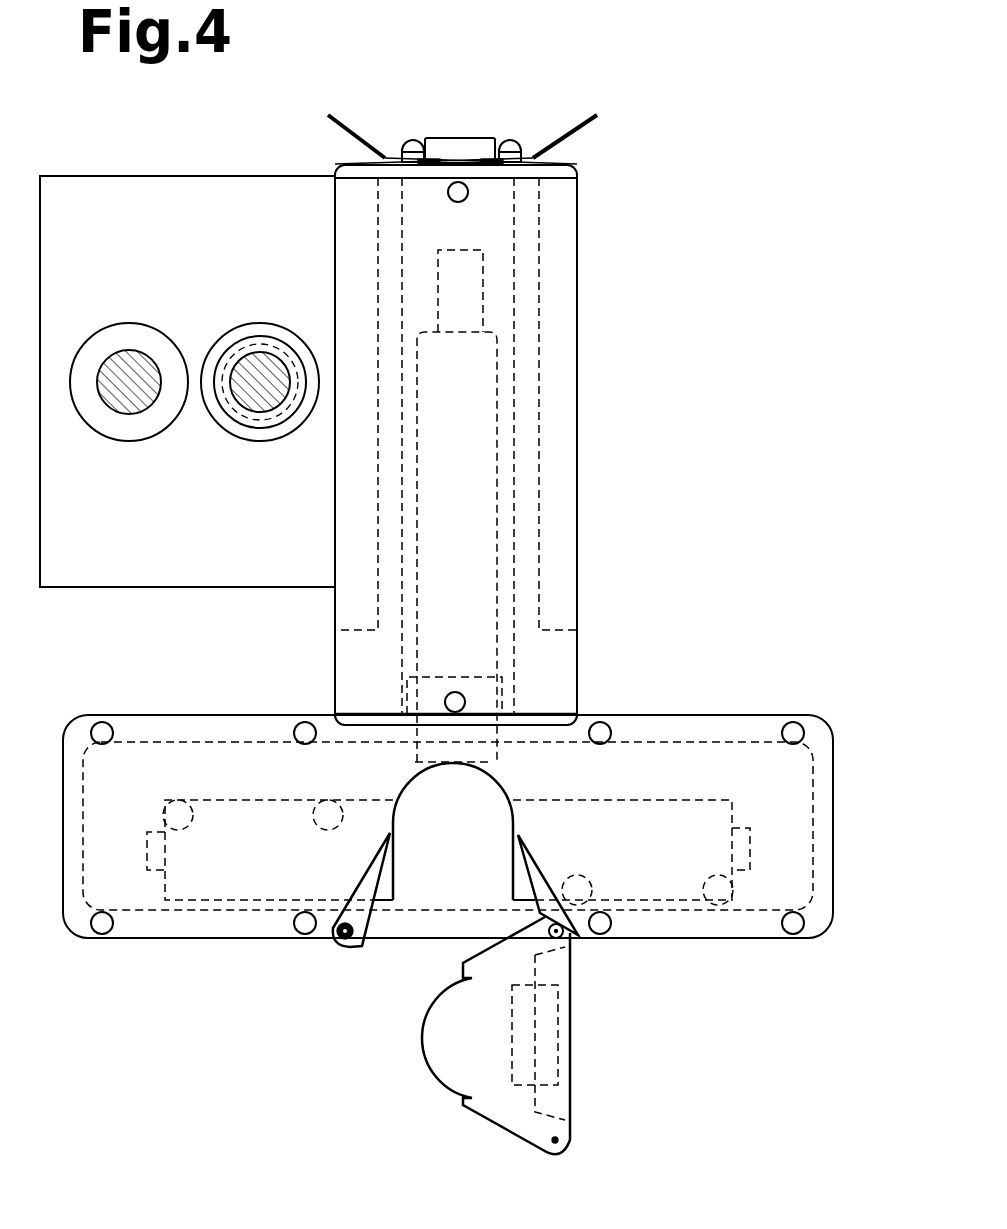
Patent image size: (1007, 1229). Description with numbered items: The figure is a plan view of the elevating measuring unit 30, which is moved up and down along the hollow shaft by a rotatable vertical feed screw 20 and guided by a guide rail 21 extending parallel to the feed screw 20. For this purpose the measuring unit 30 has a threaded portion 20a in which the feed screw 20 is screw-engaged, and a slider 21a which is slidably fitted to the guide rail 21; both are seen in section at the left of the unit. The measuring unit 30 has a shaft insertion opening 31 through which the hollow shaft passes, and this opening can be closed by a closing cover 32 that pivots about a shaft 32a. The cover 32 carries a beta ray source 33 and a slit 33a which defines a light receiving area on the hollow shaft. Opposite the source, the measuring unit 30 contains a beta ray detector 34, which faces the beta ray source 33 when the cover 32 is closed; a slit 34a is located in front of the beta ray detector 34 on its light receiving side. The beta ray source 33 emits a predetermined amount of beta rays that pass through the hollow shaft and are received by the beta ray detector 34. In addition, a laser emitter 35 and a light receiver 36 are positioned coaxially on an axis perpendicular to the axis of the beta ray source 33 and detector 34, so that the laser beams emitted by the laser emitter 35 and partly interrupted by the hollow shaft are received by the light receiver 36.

The feed screw 20 is at (262, 405).
The threaded portion 20a is at (243, 332).
The guide rail 21 is at (144, 400).
The slider 21a is at (141, 338).
The elevating measuring unit 30 is at (665, 324).
The shaft insertion opening 31 is at (488, 793).
The closing cover 32 is at (347, 953).
The shaft 32a is at (560, 941).
The beta ray source 33 is at (543, 1032).
The slit 33a is at (527, 1062).
The beta ray detector 34 is at (477, 615).
The slit 34a is at (466, 762).
The laser emitter 35 is at (262, 873).
The light receiver 36 is at (670, 888).